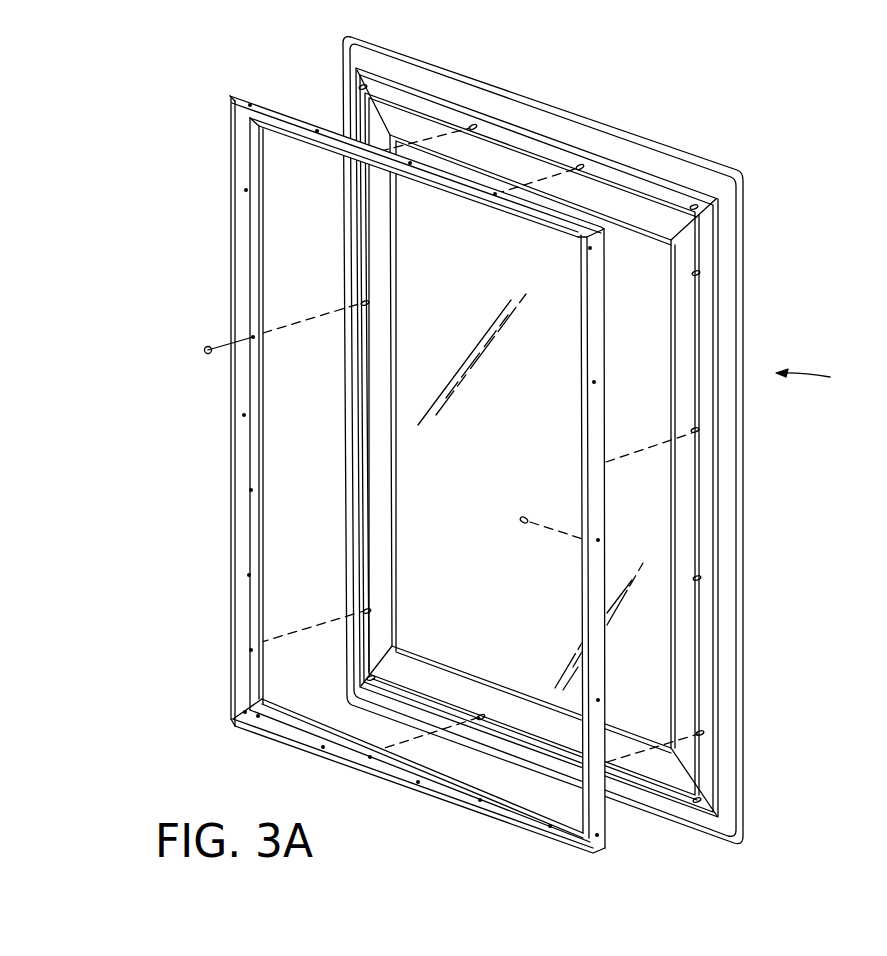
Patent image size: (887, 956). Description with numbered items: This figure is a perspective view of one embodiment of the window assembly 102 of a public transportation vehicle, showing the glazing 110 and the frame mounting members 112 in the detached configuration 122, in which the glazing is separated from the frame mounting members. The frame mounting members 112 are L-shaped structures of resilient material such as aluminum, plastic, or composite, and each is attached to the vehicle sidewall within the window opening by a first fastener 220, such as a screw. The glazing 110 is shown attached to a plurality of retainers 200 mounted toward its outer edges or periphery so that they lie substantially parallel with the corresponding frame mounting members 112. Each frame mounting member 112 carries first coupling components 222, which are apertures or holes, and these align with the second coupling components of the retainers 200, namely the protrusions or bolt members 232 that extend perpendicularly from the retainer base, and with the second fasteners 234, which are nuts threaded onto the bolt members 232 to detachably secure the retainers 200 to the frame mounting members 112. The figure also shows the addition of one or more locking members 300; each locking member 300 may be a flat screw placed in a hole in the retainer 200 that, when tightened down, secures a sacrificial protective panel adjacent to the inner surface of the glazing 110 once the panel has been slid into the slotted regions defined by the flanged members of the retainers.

The window assembly 102 is at (203, 70).
The glazing 110 is at (738, 229).
The frame mounting member 112 is at (229, 216).
The detached configuration 122 is at (821, 376).
The retainer 200 is at (708, 524).
The first fastener 220 is at (521, 515).
The first coupling component 222 is at (588, 385).
The protrusion or bolt member 232 is at (358, 83).
The second fastener 234 is at (204, 349).
The locking member 300 is at (501, 163).